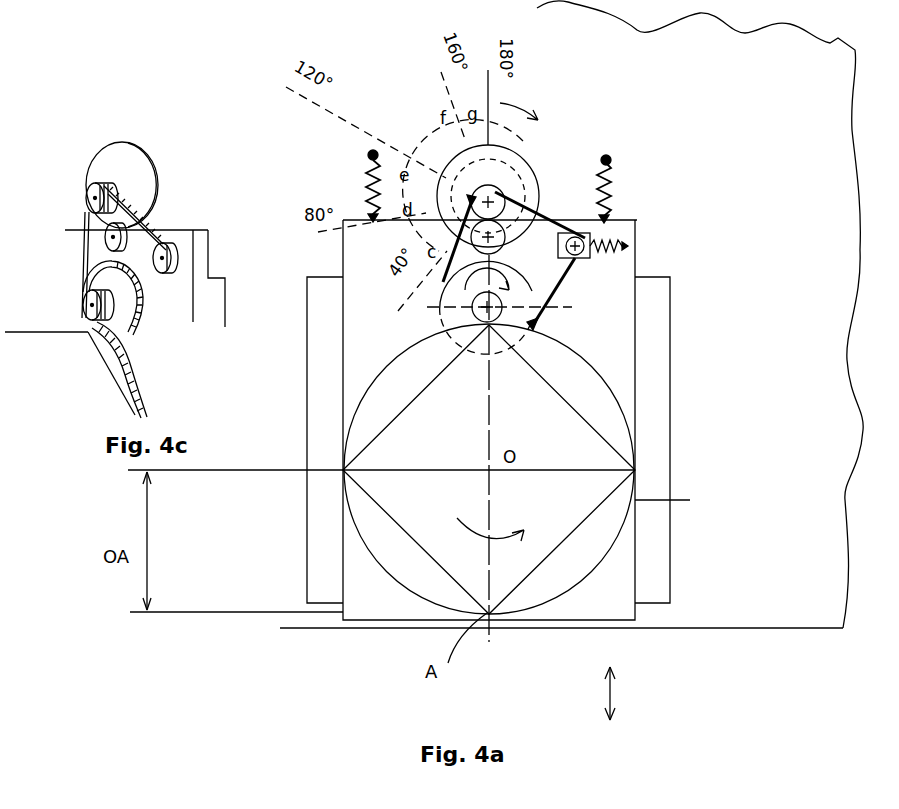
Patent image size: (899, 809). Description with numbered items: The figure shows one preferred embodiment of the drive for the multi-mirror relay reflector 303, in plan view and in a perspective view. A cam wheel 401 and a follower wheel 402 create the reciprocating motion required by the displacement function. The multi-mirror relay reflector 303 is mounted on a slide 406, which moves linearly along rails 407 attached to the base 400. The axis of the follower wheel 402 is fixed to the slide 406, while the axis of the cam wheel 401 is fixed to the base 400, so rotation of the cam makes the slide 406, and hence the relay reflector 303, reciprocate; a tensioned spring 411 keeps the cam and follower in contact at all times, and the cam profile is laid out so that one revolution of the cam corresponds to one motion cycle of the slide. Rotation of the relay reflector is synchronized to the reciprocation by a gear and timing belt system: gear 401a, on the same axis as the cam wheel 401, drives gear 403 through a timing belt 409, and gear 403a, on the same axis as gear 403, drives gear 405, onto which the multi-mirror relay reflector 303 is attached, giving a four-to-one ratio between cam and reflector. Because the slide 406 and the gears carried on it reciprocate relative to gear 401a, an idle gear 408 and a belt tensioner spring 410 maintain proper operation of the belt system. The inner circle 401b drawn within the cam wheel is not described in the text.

In FIG. 4A, the base 400 is at (705, 60).
In FIG. 4A, the cam wheel 401 is at (515, 152).
In FIG. 4C, the cam wheel 401 is at (152, 142).
In FIG. 4A, the gear 401a is at (535, 165).
In FIG. 4C, the gear 401a is at (97, 192).
In FIG. 4A, the roller pitch circle 401b is at (545, 180).
In FIG. 4A, the follower wheel 402 is at (503, 250).
In FIG. 4C, the follower wheel 402 is at (107, 243).
In FIG. 4A, the gear 403 is at (637, 280).
In FIG. 4C, the gear 403 is at (102, 275).
In FIG. 4A, the gear 403a is at (440, 310).
In FIG. 4C, the gear 403a is at (90, 313).
In FIG. 4A, the gear 405 is at (600, 357).
In FIG. 4C, the gear 405 is at (122, 373).
In FIG. 4A, the slide 406 is at (618, 378).
In FIG. 4C, the slide 406 is at (185, 265).
In FIG. 4A, the rails 407 is at (322, 567).
In FIG. 4A, the idle gear 408 is at (600, 225).
In FIG. 4C, the idle gear 408 is at (177, 228).
In FIG. 4A, the timing belt 409 is at (535, 287).
In FIG. 4A, the belt tensioner spring 410 is at (700, 251).
In FIG. 4A, the tensioned spring 411 is at (363, 185).
In FIG. 4A, the multi-mirror relay reflector 303 is at (633, 438).
In FIG. 4C, the multi-mirror relay reflector 303 is at (92, 395).